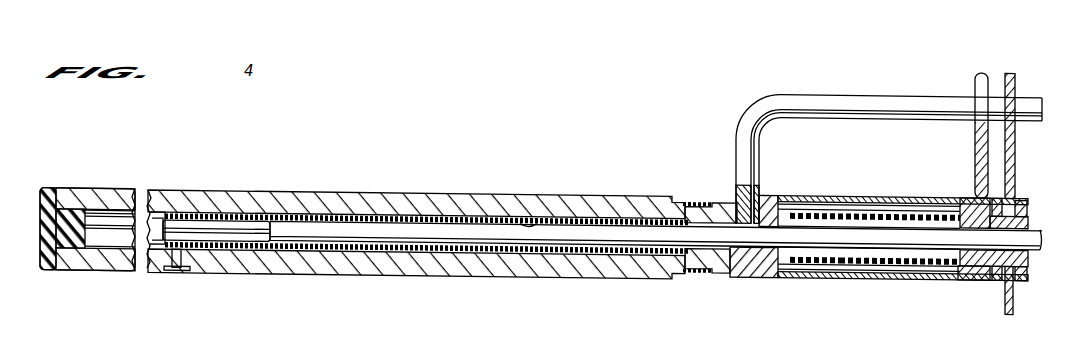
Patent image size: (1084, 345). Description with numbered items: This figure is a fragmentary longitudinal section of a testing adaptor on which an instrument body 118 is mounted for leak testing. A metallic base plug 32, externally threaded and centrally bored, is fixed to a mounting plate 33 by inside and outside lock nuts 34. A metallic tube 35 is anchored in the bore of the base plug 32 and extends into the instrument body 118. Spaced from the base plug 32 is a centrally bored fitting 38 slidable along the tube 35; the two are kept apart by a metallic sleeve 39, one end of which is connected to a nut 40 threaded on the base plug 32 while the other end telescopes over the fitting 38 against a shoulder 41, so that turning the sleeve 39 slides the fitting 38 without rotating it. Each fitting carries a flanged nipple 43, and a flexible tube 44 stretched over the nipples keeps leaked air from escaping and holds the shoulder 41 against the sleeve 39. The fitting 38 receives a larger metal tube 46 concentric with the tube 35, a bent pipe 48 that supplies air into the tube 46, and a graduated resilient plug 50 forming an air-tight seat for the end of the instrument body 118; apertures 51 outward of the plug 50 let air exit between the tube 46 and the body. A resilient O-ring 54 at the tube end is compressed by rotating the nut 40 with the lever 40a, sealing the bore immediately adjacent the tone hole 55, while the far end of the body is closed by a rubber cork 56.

The instrument body 118 is at (435, 208).
The rubber cork 56 is at (42, 232).
The resilient O-ring 54 is at (195, 210).
The tone hole 55 is at (178, 268).
The metal tube 46 is at (545, 218).
The metallic tube 35 is at (598, 244).
The apertures 51 is at (657, 218).
The graduated resilient plug 50 is at (718, 180).
The bent pipe 48 is at (762, 114).
The shoulder 41 is at (763, 200).
The nut 40 is at (778, 201).
The arm or lever 40a is at (980, 130).
The metallic sleeve 39 is at (860, 199).
The flanged nipple 43 is at (800, 263).
The flexible tube 44 is at (878, 263).
The fitting 38 is at (738, 275).
The base plug 32 is at (968, 280).
The mounting plate 33 is at (1005, 310).
The lock nuts 34 is at (1022, 278).